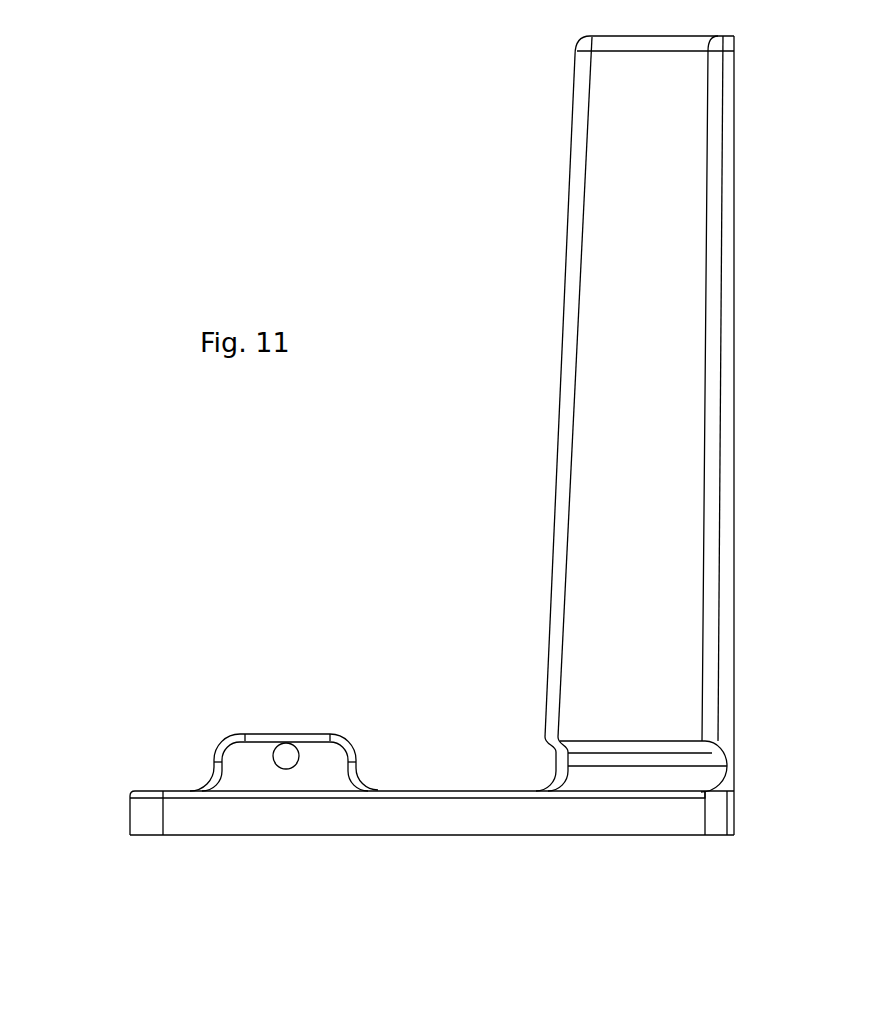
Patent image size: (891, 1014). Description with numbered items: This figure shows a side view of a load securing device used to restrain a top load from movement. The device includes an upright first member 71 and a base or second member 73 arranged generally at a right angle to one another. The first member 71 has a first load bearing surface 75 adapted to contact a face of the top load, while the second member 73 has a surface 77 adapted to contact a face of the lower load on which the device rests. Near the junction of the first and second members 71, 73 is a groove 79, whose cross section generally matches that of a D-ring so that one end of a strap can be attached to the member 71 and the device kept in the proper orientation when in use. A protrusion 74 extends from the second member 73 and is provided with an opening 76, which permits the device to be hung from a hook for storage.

The first member 71 is at (688, 386).
The second member 73 is at (398, 816).
The protrusion 74 is at (327, 755).
The first load bearing surface 75 is at (734, 252).
The opening 76 is at (289, 754).
The surface 77 is at (482, 840).
The groove 79 is at (700, 753).